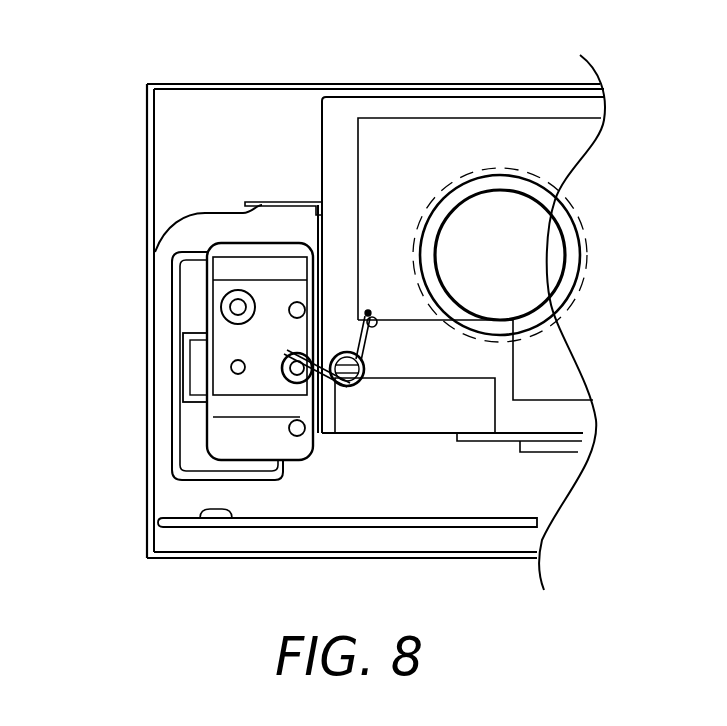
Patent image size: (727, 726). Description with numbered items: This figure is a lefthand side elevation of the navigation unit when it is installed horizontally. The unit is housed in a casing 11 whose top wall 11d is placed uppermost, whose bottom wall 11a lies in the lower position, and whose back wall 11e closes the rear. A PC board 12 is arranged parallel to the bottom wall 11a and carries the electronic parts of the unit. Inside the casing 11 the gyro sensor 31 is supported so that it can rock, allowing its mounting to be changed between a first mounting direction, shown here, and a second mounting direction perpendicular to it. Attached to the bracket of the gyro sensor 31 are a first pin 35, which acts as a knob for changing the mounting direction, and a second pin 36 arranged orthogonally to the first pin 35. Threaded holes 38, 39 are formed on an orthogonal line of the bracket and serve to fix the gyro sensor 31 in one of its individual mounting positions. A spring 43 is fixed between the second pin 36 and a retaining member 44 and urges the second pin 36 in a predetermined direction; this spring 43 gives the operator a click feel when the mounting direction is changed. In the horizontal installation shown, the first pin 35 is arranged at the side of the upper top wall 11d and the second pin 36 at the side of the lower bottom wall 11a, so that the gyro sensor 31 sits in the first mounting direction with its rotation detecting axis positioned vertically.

The casing 11 is at (392, 82).
The bottom wall 11a is at (340, 558).
The top wall 11d is at (252, 82).
The back wall 11e is at (147, 120).
The PC board 12 is at (447, 528).
The gyro sensor 31 is at (275, 243).
The first pin 35 is at (221, 301).
The second pin 36 is at (303, 383).
The threaded hole 38 is at (231, 367).
The threaded hole 39 is at (301, 303).
The spring 43 is at (364, 362).
The retaining member 44 is at (377, 326).